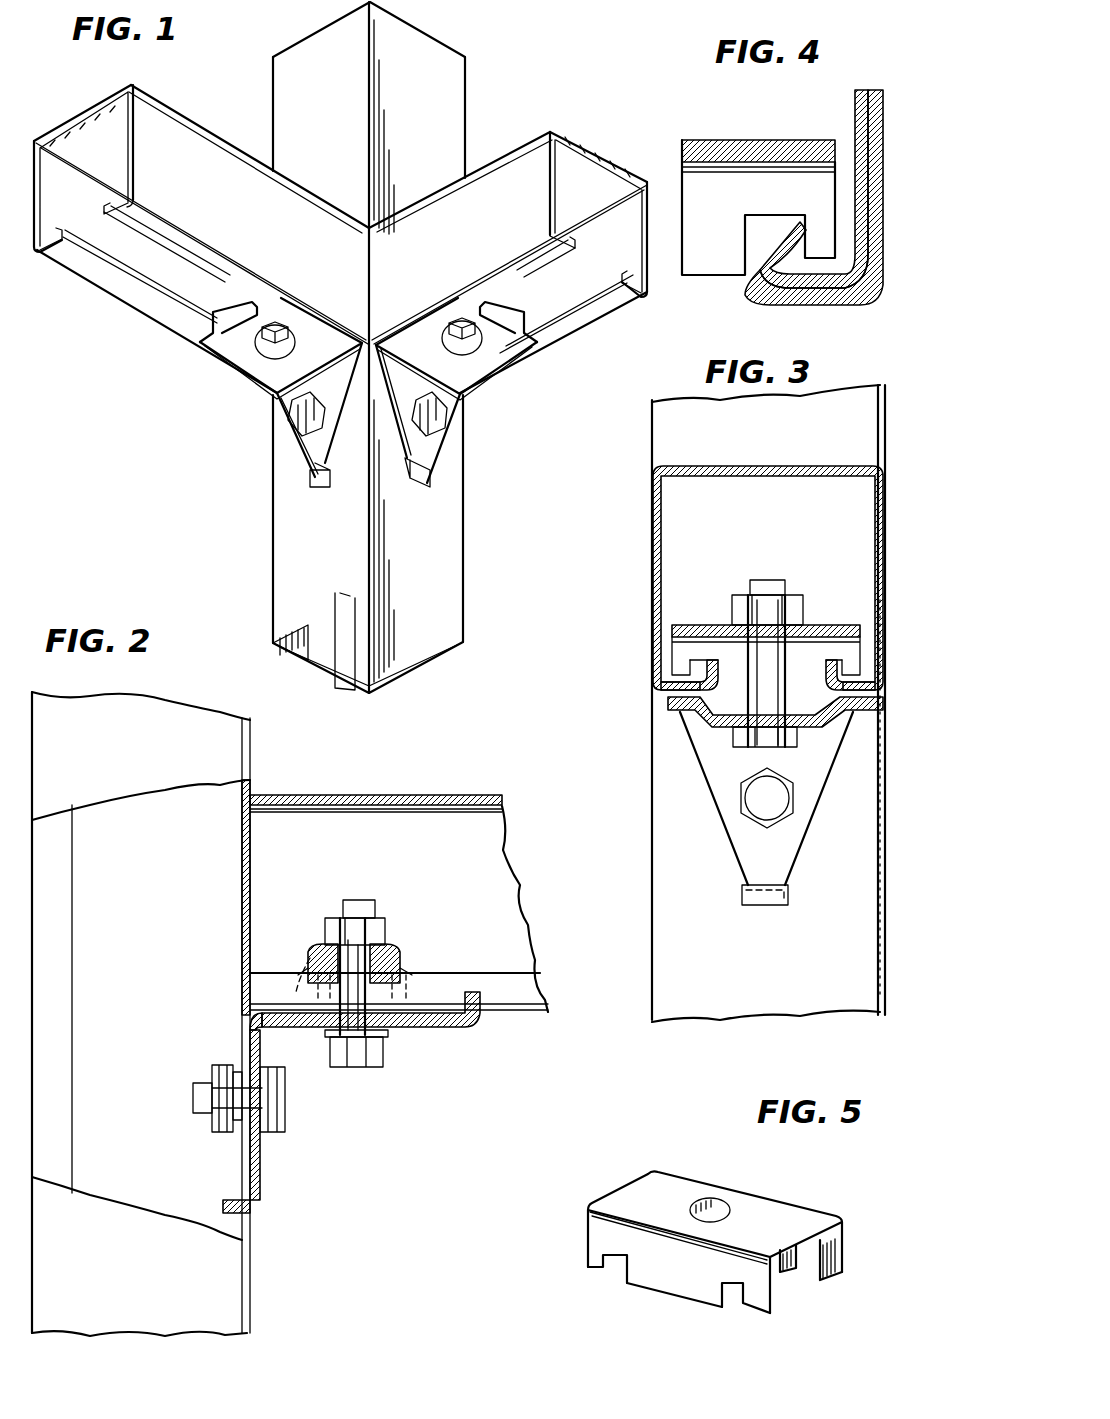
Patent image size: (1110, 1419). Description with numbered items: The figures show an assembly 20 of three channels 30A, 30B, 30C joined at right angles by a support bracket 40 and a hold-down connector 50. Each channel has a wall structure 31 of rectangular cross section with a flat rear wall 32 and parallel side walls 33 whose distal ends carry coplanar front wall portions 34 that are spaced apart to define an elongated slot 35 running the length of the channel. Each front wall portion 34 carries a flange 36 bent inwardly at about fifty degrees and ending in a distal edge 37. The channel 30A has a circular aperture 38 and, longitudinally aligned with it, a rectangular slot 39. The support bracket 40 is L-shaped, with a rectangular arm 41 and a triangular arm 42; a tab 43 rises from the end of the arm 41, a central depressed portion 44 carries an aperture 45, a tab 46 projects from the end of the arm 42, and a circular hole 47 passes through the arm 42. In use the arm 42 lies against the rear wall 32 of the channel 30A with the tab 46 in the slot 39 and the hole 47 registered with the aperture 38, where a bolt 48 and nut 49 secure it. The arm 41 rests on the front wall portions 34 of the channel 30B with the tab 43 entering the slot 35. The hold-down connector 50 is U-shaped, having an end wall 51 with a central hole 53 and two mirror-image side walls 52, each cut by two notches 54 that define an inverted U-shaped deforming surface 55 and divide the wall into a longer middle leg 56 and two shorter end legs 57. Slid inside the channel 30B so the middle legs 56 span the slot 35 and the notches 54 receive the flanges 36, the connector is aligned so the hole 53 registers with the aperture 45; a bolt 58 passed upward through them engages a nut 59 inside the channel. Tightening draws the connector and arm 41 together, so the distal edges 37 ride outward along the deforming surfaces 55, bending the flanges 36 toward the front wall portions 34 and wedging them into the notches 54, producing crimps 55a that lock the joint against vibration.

In FIG. 1, the assembly 20 is at (232, 32).
In FIG. 1, the channel 30A is at (492, 78).
In FIG. 2, the channel 30A is at (210, 698).
In FIG. 3, the channel 30A is at (768, 703).
In FIG. 1, the channel 30B is at (544, 123).
In FIG. 2, the channel 30B is at (508, 782).
In FIG. 1, the channel 30C is at (210, 121).
In FIG. 1, the wall structure 31 is at (255, 150).
In FIG. 1, the rear wall 32 is at (98, 110).
In FIG. 2, the rear wall 32 is at (242, 842).
In FIG. 3, the rear wall 32 is at (812, 468).
In FIG. 1, the side walls 33 is at (100, 143).
In FIG. 2, the side walls 33 is at (525, 878).
In FIG. 3, the side walls 33 is at (660, 548).
In FIG. 4, the side walls 33 is at (880, 160).
In FIG. 1, the front wall portions 34 is at (145, 220).
In FIG. 4, the front wall portions 34 is at (830, 303).
In FIG. 1, the slot 35 is at (164, 282).
In FIG. 1, the flange 36 is at (88, 205).
In FIG. 2, the flange 36 is at (72, 875).
In FIG. 3, the flange 36 is at (700, 680).
In FIG. 4, the flange 36 is at (780, 248).
In FIG. 4, the distal edge 37 is at (798, 220).
In FIG. 2, the aperture 38 is at (242, 1128).
In FIG. 2, the slot 39 is at (252, 1212).
In FIG. 3, the slot 39 is at (766, 906).
In FIG. 1, the support bracket 40 is at (357, 415).
In FIG. 2, the support bracket 40 is at (333, 1099).
In FIG. 3, the support bracket 40 is at (743, 801).
In FIG. 1, the arm 41 is at (232, 350).
In FIG. 2, the arm 41 is at (425, 1028).
In FIG. 3, the arm 41 is at (672, 705).
In FIG. 1, the arm 42 is at (305, 442).
In FIG. 2, the arm 42 is at (260, 1175).
In FIG. 3, the arm 42 is at (828, 778).
In FIG. 1, the tab 43 is at (225, 312).
In FIG. 2, the tab 43 is at (467, 1010).
In FIG. 2, the depressed portion 44 is at (395, 1045).
In FIG. 3, the depressed portion 44 is at (728, 722).
In FIG. 2, the aperture 45 is at (330, 1042).
In FIG. 1, the tab 46 is at (325, 485).
In FIG. 2, the tab 46 is at (223, 1208).
In FIG. 3, the tab 46 is at (788, 893).
In FIG. 2, the hole 47 is at (270, 1132).
In FIG. 1, the bolt 48 is at (298, 418).
In FIG. 2, the bolt 48 is at (193, 1095).
In FIG. 3, the bolt 48 is at (765, 800).
In FIG. 2, the nut 49 is at (222, 1065).
In FIG. 2, the hold-down connector 50 is at (351, 948).
In FIG. 3, the hold-down connector 50 is at (733, 666).
In FIG. 4, the hold-down connector 50 is at (765, 201).
In FIG. 5, the hold-down connector 50 is at (709, 1249).
In FIG. 4, the end wall 51 is at (792, 140).
In FIG. 5, the end wall 51 is at (750, 1210).
In FIG. 4, the side wall 52 is at (750, 168).
In FIG. 5, the side wall 52 is at (598, 1230).
In FIG. 2, the hole 53 is at (365, 945).
In FIG. 5, the hole 53 is at (712, 1200).
In FIG. 3, the notches 54 is at (695, 697).
In FIG. 4, the notches 54 is at (760, 239).
In FIG. 5, the notches 54 is at (618, 1279).
In FIG. 2, the deforming surface 55 is at (405, 968).
In FIG. 4, the deforming surface 55 is at (745, 228).
In FIG. 5, the deforming surface 55 is at (600, 1268).
In FIG. 2, the crimps 55a is at (300, 965).
In FIG. 3, the middle leg 56 is at (795, 712).
In FIG. 4, the middle leg 56 is at (722, 272).
In FIG. 5, the middle leg 56 is at (668, 1283).
In FIG. 2, the end legs 57 is at (300, 1000).
In FIG. 4, the end legs 57 is at (812, 258).
In FIG. 5, the end legs 57 is at (592, 1256).
In FIG. 2, the bolt 58 is at (358, 900).
In FIG. 3, the bolt 58 is at (762, 580).
In FIG. 2, the nut 59 is at (375, 928).
In FIG. 3, the nut 59 is at (805, 612).